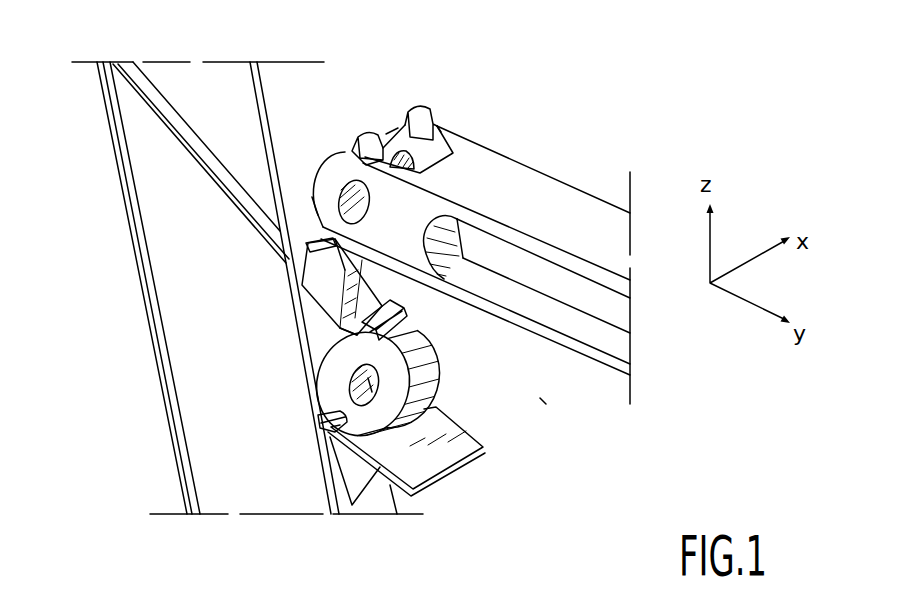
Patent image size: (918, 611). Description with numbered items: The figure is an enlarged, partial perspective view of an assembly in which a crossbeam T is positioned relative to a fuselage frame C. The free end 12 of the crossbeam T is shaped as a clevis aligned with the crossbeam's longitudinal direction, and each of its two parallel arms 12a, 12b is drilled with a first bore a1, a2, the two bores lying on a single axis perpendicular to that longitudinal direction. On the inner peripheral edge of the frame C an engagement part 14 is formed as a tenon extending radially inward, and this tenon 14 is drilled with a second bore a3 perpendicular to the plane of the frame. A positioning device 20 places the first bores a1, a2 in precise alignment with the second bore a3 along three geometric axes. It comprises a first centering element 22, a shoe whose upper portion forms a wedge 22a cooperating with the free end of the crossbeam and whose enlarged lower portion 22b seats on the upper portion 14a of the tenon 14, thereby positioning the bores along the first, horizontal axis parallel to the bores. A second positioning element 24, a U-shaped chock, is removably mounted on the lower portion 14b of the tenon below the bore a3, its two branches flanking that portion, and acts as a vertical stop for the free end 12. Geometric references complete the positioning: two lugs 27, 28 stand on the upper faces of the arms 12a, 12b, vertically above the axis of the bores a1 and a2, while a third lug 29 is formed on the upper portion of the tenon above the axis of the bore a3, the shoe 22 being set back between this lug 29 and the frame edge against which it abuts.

The free end of the crossbeam 12 is at (472, 129).
The arm of the clevis 12a is at (390, 128).
The arm of the clevis 12b is at (323, 145).
The engagement part (tenon) 14 is at (445, 366).
The upper portion of the tenon 14a is at (364, 261).
The lower portion of the tenon 14b is at (320, 418).
The positioning device 20 is at (546, 404).
The first centering element (shoe) 22 is at (327, 313).
The wedge 22a is at (323, 248).
The lower portion (base) of the shoe 22b is at (357, 335).
The second positioning element (chock) 24 is at (440, 452).
The lug 27 is at (410, 113).
The lug 28 is at (368, 136).
The third lug 29 is at (405, 307).
The fuselage frame C is at (114, 203).
The crossbeam T is at (585, 175).
The first bore a1 is at (420, 150).
The first bore a2 is at (313, 200).
The second bore a3 is at (345, 401).